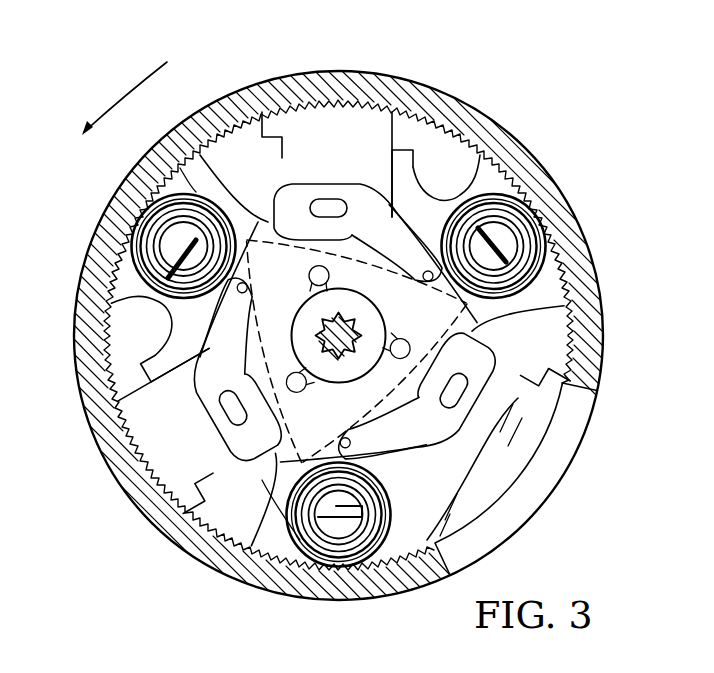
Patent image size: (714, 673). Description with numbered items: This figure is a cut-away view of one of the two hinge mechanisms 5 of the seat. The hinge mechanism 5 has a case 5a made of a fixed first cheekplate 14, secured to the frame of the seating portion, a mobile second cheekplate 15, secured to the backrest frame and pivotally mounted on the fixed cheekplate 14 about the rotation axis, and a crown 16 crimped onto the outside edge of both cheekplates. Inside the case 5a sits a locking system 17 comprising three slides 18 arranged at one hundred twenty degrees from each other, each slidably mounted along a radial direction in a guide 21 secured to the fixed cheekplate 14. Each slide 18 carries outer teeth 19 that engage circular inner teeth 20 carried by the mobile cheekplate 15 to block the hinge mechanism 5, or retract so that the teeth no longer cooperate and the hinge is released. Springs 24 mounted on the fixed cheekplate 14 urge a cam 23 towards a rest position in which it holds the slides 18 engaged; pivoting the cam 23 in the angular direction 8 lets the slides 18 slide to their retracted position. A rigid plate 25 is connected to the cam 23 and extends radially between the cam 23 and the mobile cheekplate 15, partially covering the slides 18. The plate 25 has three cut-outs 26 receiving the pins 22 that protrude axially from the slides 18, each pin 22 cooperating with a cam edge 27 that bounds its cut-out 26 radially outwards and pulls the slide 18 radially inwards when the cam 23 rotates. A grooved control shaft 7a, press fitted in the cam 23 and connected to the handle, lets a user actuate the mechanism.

The hinge mechanism 5 is at (495, 96).
The case 5a is at (604, 396).
The control shaft 7a is at (350, 333).
The angular direction 8 is at (142, 77).
The first cheekplate 14 is at (496, 192).
The second cheekplate 15 is at (491, 479).
The crown 16 is at (563, 430).
The locking system 17 is at (345, 245).
The slide 18 is at (343, 135).
The outer teeth 19 is at (283, 195).
The inner teeth 20 is at (563, 267).
The guide 21 is at (352, 245).
The pin 22 is at (325, 207).
The cam 23 is at (285, 505).
The spring 24 is at (523, 212).
The plate 25 is at (277, 366).
The cut-out 26 is at (237, 345).
The cam edge 27 is at (347, 242).